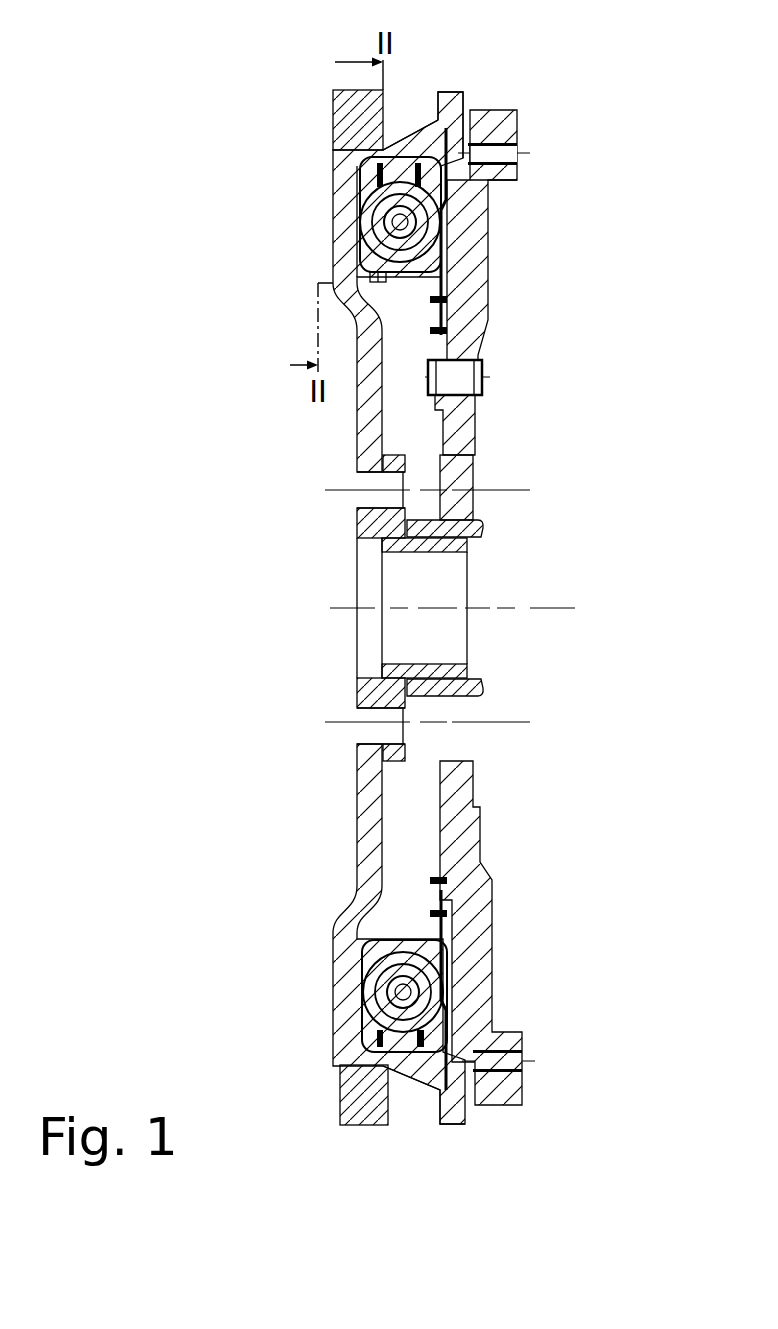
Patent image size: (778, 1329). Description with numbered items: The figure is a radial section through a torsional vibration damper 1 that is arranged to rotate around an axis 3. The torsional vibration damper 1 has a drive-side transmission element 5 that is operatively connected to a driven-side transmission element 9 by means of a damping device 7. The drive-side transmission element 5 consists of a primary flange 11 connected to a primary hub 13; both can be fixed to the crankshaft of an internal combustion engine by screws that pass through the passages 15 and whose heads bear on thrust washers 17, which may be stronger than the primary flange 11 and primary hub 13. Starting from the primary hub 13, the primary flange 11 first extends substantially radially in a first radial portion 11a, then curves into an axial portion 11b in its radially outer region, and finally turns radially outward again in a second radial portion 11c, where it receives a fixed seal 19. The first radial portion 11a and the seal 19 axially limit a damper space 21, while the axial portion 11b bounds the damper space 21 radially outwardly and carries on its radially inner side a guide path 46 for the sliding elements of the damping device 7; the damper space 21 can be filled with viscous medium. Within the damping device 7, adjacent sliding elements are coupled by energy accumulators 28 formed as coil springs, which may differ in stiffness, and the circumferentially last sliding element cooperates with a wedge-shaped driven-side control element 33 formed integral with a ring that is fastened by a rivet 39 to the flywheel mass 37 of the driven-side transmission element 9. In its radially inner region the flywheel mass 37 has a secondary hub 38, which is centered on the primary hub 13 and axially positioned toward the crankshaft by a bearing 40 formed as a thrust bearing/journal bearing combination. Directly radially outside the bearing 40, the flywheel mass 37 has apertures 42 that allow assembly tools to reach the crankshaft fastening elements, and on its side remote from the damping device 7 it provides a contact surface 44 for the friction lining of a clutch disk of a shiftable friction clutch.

The torsional vibration damper 1 is at (322, 1040).
The axis 3 is at (547, 607).
The drive-side transmission element 5 is at (417, 1085).
The damping device 7 is at (436, 224).
The driven-side transmission element 9 is at (490, 311).
The primary flange 11 is at (372, 435).
The first radial portion 11a is at (345, 201).
The axial portion 11b is at (415, 152).
The second radial portion 11c is at (448, 105).
The primary hub 13 is at (377, 546).
The passages 15 is at (377, 737).
The thrust washers 17 is at (377, 465).
The seal 19 is at (480, 153).
The damper space 21 is at (482, 182).
The energy accumulator 28 is at (373, 245).
The driven-side control element 33 is at (440, 288).
The flywheel mass 37 is at (467, 433).
The secondary hub 38 is at (462, 530).
The rivet 39 is at (458, 376).
The bearing 40 is at (467, 670).
The apertures 42 is at (457, 470).
The contact surface 44 is at (493, 948).
The guide path 46 is at (390, 162).